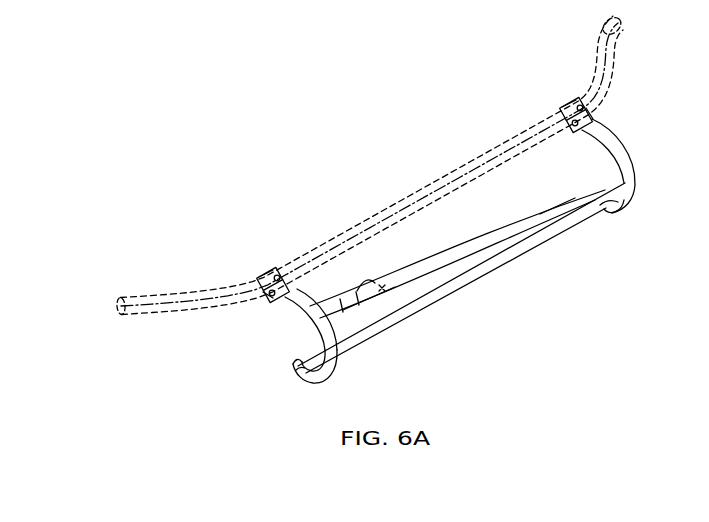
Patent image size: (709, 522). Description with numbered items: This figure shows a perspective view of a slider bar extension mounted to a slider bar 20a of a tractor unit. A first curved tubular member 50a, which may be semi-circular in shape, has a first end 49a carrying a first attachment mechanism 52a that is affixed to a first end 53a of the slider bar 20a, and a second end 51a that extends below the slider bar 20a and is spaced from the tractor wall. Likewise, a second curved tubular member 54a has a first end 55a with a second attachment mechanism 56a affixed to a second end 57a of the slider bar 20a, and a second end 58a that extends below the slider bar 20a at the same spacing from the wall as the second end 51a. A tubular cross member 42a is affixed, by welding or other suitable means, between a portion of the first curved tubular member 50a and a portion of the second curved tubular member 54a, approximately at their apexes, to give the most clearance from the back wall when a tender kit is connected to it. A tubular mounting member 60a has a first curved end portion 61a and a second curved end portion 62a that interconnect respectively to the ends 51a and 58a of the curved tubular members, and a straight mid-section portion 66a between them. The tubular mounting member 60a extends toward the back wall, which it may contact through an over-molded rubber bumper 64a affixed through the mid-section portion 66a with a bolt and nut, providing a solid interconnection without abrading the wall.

The slider bar 20a is at (593, 57).
The tubular cross member 42a is at (476, 272).
The first end of first curved tubular member 49a is at (270, 298).
The first curved tubular member 50a is at (312, 306).
The second end of first curved tubular member 51a is at (330, 380).
The first attachment mechanism 52a is at (275, 269).
The first end of slider bar 53a is at (248, 273).
The second curved tubular member 54a is at (629, 156).
The first end of second curved tubular member 55a is at (601, 110).
The second attachment mechanism 56a is at (569, 99).
The second end of slider bar 57a is at (530, 115).
The second end of second curved tubular member 58a is at (620, 212).
The tubular mounting member 60a is at (410, 247).
The first curved end portion 61a is at (296, 374).
The second curved end portion 62a is at (563, 203).
The over-molded rubber bumper 64a is at (360, 280).
The straight mid-section portion 66a is at (368, 301).